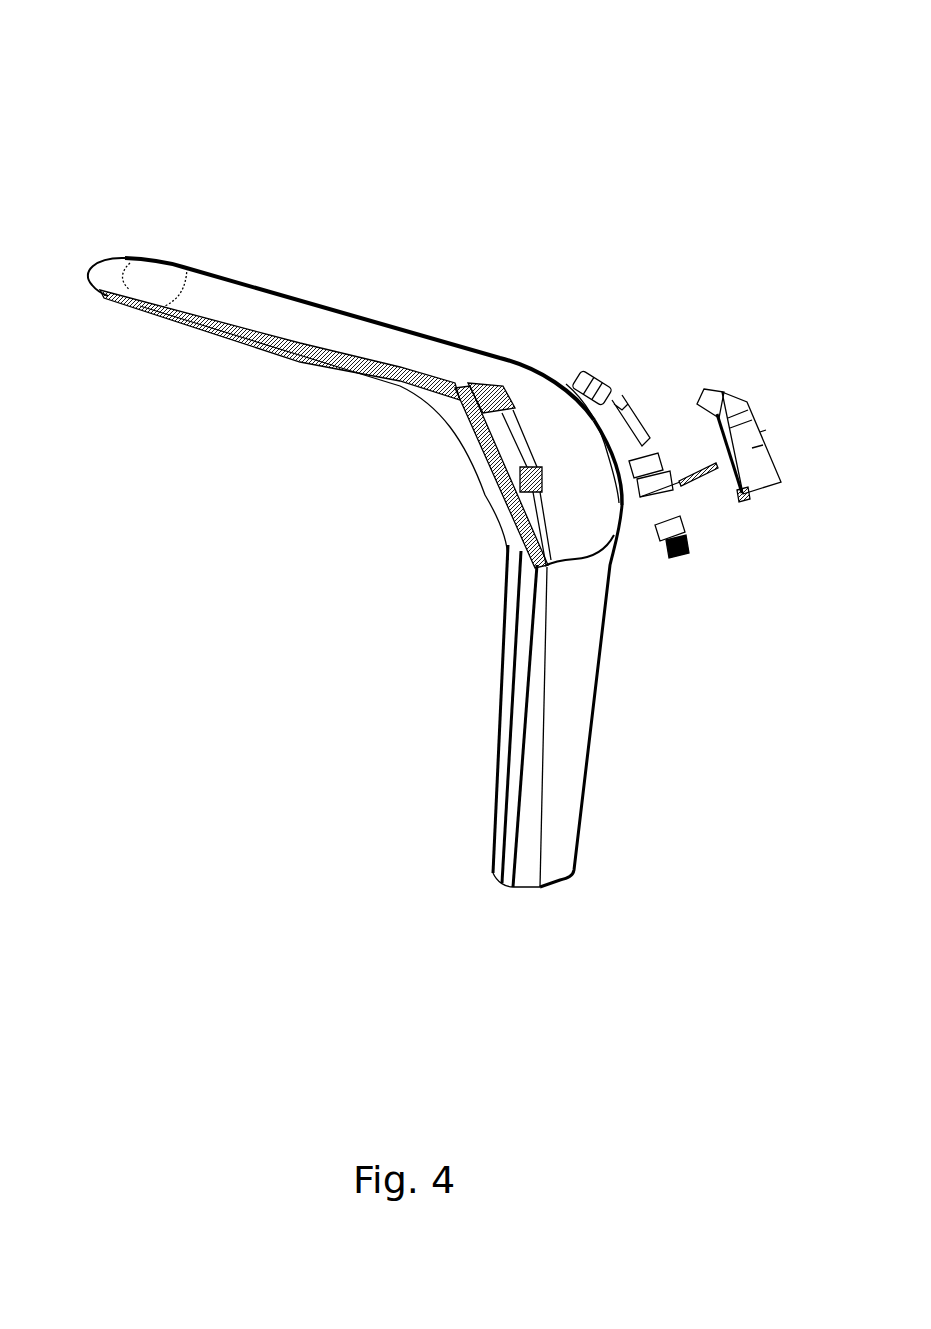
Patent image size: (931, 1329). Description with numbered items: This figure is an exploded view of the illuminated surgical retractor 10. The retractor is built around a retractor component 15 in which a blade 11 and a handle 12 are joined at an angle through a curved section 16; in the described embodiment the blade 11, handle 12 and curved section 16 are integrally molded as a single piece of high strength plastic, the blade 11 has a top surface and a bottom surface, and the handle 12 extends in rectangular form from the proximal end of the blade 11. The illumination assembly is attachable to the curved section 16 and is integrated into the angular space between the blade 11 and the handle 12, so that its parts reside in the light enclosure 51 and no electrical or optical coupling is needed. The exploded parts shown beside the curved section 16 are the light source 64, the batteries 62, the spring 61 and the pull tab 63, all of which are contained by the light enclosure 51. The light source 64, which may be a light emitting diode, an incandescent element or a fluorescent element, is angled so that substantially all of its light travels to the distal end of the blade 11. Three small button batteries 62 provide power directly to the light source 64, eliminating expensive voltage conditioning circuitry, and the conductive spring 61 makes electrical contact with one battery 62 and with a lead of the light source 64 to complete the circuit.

The illuminated surgical retractor 10 is at (63, 43).
The blade 11 is at (398, 356).
The handle 12 is at (505, 597).
The retractor component 15 is at (320, 503).
The curved section 16 is at (490, 488).
The light enclosure 51 is at (756, 418).
The spring 61 is at (685, 556).
The battery 62 is at (650, 457).
The pull tab 63 is at (693, 486).
The light source 64 is at (593, 376).